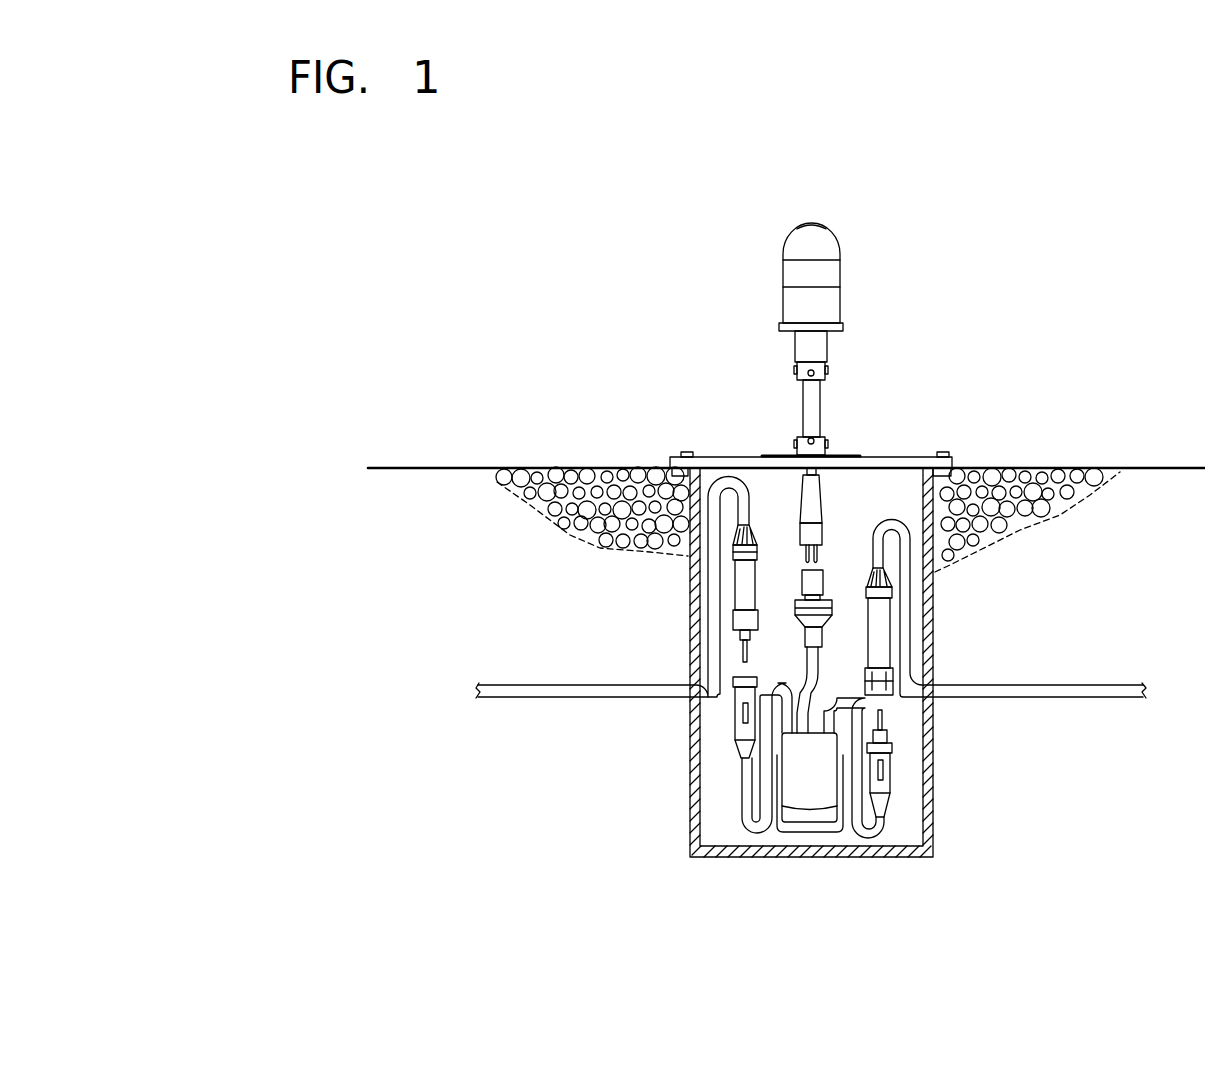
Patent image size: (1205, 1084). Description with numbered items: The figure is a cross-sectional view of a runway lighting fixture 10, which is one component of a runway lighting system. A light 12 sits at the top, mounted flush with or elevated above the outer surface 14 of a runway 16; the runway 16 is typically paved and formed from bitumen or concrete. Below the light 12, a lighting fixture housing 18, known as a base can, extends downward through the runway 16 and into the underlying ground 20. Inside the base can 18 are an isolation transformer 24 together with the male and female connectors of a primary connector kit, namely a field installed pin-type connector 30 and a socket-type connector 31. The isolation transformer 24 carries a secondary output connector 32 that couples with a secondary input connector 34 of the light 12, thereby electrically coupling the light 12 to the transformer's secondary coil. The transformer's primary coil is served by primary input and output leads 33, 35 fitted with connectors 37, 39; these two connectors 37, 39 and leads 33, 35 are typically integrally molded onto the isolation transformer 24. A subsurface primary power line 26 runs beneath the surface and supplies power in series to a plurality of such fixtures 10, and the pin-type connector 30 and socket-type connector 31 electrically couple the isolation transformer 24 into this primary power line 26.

The runway lighting fixture 10 is at (786, 556).
The light 12 is at (821, 306).
The outer surface 14 is at (982, 465).
The runway 16 is at (1020, 505).
The lighting fixture housing 18 is at (732, 862).
The ground 20 is at (1101, 560).
The isolation transformer 24 is at (810, 835).
The subsurface primary power line 26 is at (713, 631).
The pin-type connector 30 is at (739, 575).
The socket-type connector 31 is at (884, 606).
The secondary output connector 32 is at (834, 632).
The primary input lead 33 is at (739, 804).
The secondary input connector 34 is at (824, 495).
The primary output lead 35 is at (884, 835).
The primary connector 37 is at (733, 735).
The primary connector 39 is at (889, 768).